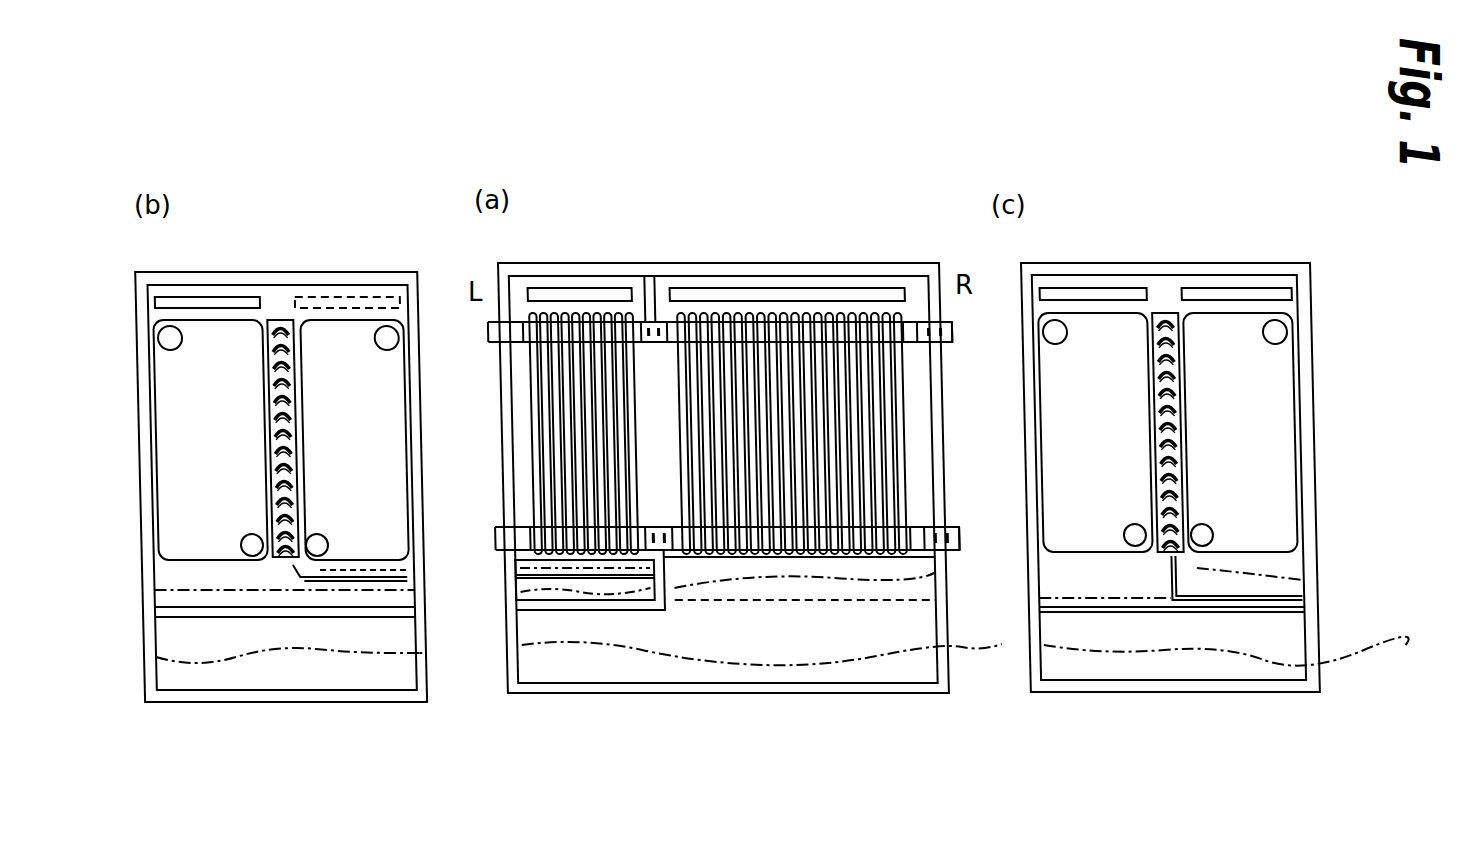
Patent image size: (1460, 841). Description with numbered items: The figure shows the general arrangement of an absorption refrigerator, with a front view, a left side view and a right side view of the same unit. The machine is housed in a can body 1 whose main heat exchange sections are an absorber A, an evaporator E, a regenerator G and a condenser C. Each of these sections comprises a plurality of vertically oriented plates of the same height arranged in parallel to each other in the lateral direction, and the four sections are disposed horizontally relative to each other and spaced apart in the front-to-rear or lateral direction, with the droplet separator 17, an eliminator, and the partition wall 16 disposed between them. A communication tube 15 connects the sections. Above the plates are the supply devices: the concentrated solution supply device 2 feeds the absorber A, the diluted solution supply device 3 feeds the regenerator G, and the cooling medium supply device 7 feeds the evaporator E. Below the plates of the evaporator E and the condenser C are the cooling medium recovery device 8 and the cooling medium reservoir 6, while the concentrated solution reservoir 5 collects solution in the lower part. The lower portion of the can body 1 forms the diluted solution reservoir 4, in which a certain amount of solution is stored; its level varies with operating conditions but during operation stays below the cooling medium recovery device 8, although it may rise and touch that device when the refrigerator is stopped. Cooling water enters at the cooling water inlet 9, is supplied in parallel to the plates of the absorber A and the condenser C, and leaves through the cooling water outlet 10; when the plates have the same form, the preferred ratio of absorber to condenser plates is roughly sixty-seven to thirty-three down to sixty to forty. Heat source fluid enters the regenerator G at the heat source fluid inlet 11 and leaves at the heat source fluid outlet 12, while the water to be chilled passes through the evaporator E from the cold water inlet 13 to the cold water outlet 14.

The can body 1 is at (708, 262).
The concentrated solution supply device 2 is at (780, 287).
The diluted solution supply device 3 is at (210, 295).
The diluted solution reservoir 4 is at (197, 680).
The concentrated solution reservoir 5 is at (220, 603).
The cooling medium reservoir 6 is at (380, 570).
The cooling medium supply device 7 is at (1238, 288).
The cooling medium recovery device 8 is at (733, 597).
The cooling water inlet 9 is at (317, 556).
The cooling water outlet 10 is at (387, 338).
The heat source fluid inlet 11 is at (252, 556).
The heat source fluid outlet 12 is at (170, 338).
The cold water inlet 13 is at (1202, 547).
The cold water outlet 14 is at (1273, 328).
The communication tube 15 is at (645, 322).
The partition wall 16 is at (657, 318).
The droplet separator 17 is at (283, 323).
The absorber A is at (837, 312).
The condenser C is at (585, 315).
The regenerator G is at (232, 370).
The evaporator E is at (1218, 355).